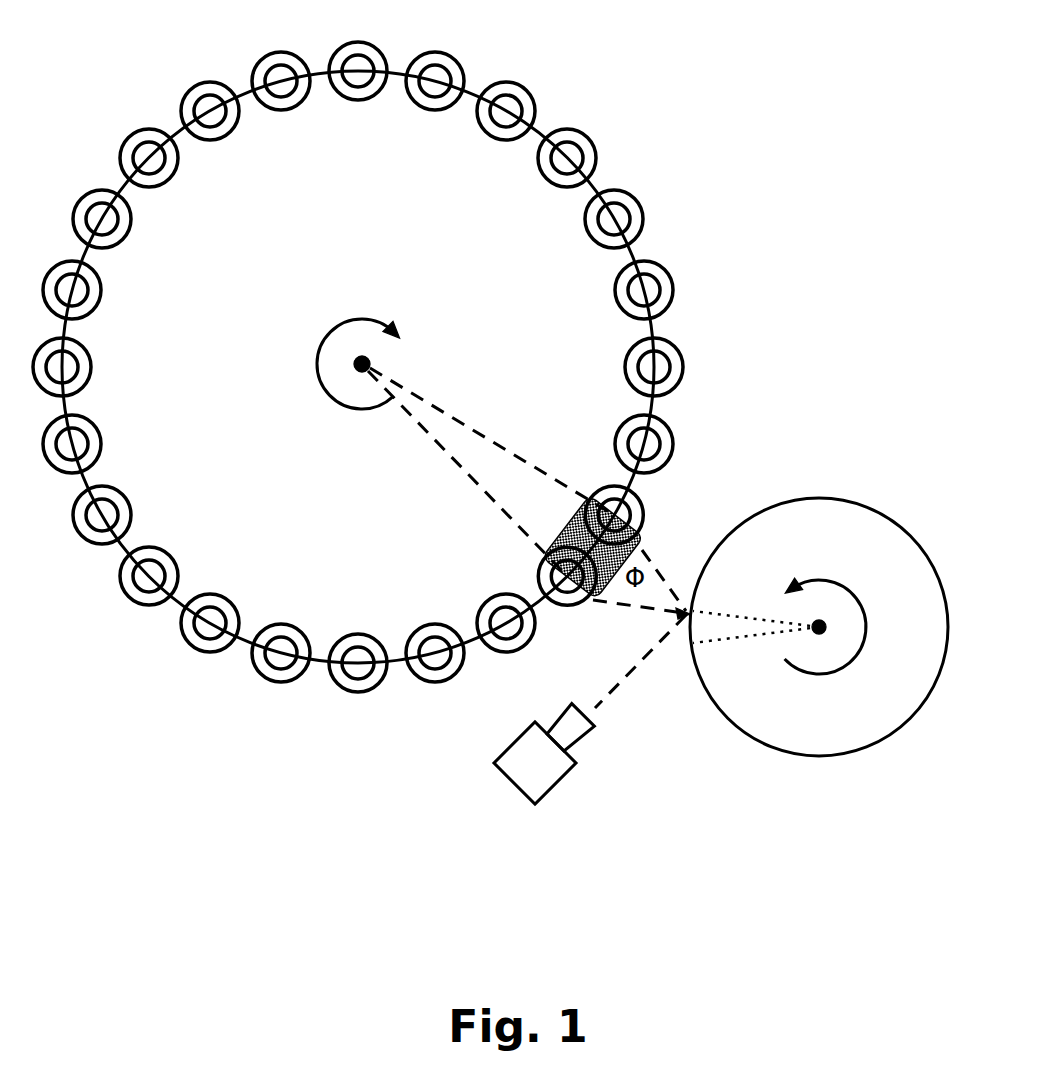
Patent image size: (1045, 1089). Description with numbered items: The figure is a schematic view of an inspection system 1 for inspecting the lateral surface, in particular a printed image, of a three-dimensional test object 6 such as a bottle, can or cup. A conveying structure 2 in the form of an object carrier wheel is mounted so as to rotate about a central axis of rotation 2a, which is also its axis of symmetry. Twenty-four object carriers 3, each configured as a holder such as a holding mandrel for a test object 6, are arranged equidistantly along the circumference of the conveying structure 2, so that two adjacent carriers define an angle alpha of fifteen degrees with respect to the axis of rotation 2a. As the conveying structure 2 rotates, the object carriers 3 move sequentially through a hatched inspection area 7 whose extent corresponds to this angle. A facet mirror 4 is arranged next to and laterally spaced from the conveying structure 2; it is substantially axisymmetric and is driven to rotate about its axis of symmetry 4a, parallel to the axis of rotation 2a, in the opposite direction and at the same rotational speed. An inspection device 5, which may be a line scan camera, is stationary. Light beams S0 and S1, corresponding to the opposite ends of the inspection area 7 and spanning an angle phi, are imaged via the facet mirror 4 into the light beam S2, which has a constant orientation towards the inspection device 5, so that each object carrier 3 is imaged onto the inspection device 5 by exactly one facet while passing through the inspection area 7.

The inspection system 1 is at (841, 166).
The conveying structure 2 is at (352, 254).
The axis of rotation 2a is at (362, 364).
The object carriers 3 is at (278, 662).
The facet mirror 4 is at (887, 513).
The axis of symmetry 4a is at (818, 622).
The inspection device 5 is at (560, 787).
The test object 6 is at (250, 670).
The inspection area 7 is at (633, 513).
The light beam S0 is at (663, 563).
The light beam S1 is at (657, 610).
The light beam S2 is at (643, 663).